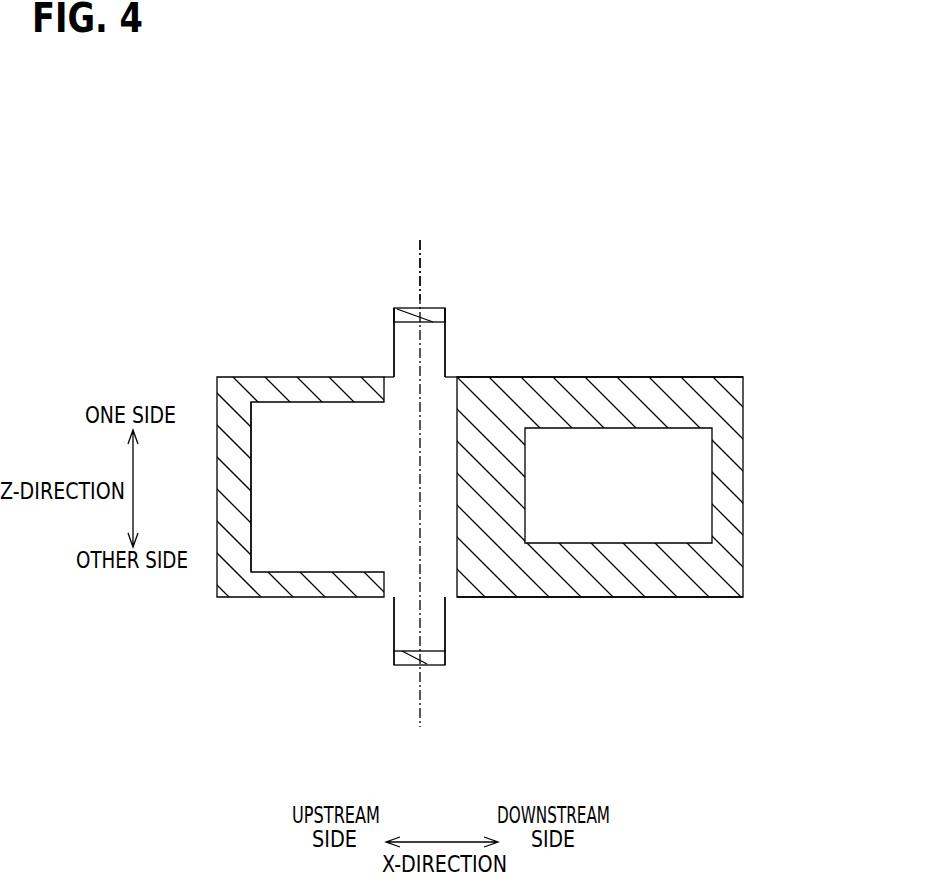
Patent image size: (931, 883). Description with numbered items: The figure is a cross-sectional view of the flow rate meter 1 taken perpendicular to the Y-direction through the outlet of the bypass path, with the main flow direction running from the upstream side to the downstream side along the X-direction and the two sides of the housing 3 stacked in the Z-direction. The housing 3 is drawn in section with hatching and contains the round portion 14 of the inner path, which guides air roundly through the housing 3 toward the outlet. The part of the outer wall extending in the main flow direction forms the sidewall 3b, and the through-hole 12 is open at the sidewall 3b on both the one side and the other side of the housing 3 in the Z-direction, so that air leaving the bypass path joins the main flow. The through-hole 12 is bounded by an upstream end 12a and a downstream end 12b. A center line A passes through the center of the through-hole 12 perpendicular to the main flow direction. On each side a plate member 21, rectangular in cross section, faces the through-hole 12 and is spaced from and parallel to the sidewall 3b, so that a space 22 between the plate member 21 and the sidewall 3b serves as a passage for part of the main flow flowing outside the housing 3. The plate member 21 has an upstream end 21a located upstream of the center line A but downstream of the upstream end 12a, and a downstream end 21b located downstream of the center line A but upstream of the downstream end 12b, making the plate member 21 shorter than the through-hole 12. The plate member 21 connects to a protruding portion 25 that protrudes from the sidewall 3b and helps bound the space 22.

The flow rate meter 1 is at (466, 437).
The housing 3 is at (718, 388).
The sidewall 3b is at (645, 375).
The through-hole 12 is at (412, 452).
The upstream end of the through-hole 12a is at (383, 376).
The downstream end of the through-hole 12b is at (458, 377).
The round portion 14 is at (277, 548).
The plate member 21 is at (406, 313).
The upstream end of the plate member 21a is at (398, 312).
The downstream end of the plate member 21b is at (447, 310).
The space 22 is at (430, 338).
The protruding portion 25 is at (400, 328).
The center line A is at (418, 280).